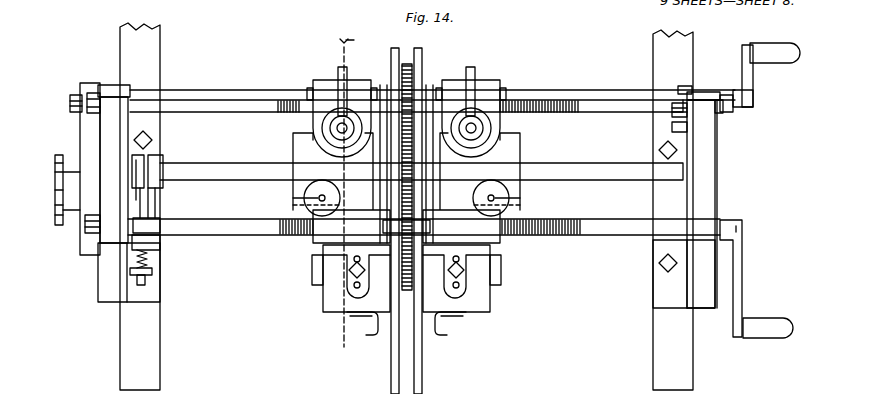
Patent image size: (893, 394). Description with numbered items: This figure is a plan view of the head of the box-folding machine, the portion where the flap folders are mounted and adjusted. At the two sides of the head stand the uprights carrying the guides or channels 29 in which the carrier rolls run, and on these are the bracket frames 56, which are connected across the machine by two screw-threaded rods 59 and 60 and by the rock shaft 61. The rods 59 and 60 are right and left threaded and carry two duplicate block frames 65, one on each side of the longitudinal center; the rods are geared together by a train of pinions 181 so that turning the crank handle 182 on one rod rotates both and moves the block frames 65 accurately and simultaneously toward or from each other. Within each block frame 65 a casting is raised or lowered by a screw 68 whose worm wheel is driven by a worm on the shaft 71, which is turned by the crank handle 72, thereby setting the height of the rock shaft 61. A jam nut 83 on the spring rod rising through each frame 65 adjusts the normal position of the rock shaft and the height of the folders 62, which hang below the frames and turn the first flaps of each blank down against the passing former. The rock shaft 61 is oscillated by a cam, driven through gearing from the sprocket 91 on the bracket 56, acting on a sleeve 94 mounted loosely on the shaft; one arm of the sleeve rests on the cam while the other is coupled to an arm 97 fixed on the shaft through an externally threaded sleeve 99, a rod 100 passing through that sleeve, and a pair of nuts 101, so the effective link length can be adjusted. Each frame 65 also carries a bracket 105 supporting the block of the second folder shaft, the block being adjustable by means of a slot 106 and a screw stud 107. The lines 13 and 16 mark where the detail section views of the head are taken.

The section line 13 is at (120, 202).
The section line 16 is at (345, 200).
The guide or channel 29 is at (145, 352).
The bracket frame 56 is at (409, 196).
The rod 59 is at (608, 235).
The rod 60 is at (635, 112).
The rock shaft 61 is at (598, 180).
The folder 62 is at (406, 332).
The block frame 65 is at (378, 170).
The screw 68 is at (337, 128).
The shaft 71 is at (622, 95).
The crank handle 72 is at (762, 48).
The jam nut 83 is at (304, 198).
The sprocket 91 is at (60, 212).
The sleeve 94 is at (140, 178).
The arm 97 is at (200, 219).
The externally threaded sleeve 99 is at (147, 262).
The rod 100 is at (143, 212).
The nut 101 is at (145, 278).
The bracket 105 is at (349, 270).
The slot 106 is at (354, 259).
The screw stud 107 is at (354, 286).
The train of pinions 181 is at (412, 72).
The crank handle 182 is at (742, 292).